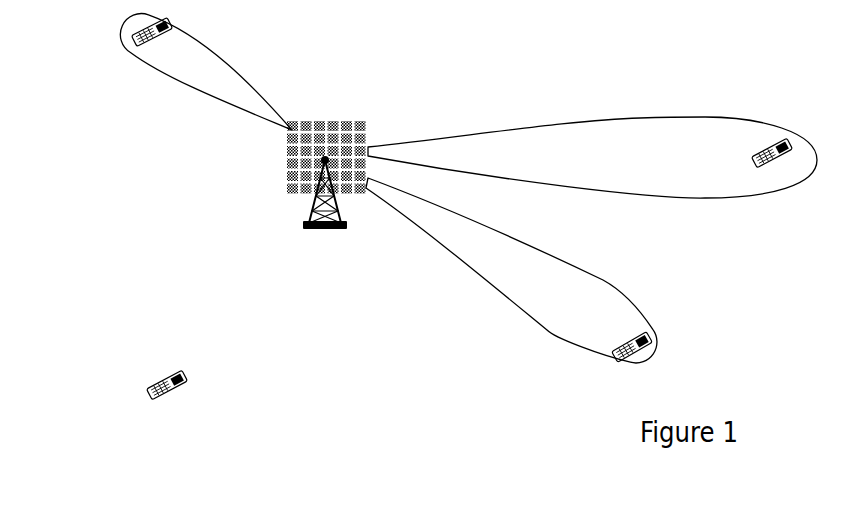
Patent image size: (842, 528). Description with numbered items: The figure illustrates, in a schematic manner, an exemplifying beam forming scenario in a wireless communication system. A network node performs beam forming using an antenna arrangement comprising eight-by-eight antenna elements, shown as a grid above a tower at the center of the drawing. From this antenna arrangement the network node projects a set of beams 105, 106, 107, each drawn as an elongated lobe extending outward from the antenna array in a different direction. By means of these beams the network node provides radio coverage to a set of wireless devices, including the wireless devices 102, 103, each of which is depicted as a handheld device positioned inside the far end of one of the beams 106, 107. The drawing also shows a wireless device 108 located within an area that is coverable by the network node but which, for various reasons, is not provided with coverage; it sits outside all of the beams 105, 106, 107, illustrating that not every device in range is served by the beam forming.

The beam 105 is at (190, 94).
The beam 106 is at (669, 118).
The beam 107 is at (604, 281).
The wireless device 102 is at (784, 143).
The wireless device 103 is at (659, 344).
The wireless device 108 is at (181, 385).